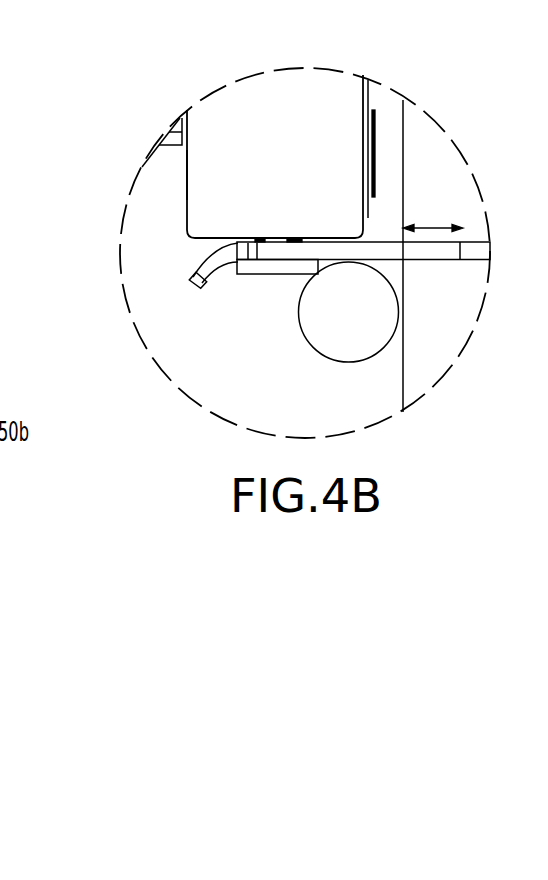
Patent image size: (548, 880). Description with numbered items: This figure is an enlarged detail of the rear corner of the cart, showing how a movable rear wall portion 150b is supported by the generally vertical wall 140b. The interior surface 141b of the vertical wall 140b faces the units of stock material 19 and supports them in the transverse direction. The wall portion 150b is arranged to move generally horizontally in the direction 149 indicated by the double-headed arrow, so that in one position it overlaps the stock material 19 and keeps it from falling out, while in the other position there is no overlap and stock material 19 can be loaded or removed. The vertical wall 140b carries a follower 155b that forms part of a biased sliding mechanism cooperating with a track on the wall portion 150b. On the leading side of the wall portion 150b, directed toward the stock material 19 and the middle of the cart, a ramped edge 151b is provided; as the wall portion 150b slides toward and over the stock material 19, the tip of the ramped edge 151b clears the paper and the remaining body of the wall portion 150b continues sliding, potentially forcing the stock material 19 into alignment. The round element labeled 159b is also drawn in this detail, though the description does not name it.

The vertical wall 140b is at (287, 117).
The stock material 19 is at (173, 130).
The interior surface 141b is at (187, 172).
The ramped edge 151b is at (210, 267).
The rear wall portion 150b is at (432, 260).
The direction of wall movement 149 is at (435, 228).
The follower 155b is at (257, 274).
The roller 159b is at (373, 340).